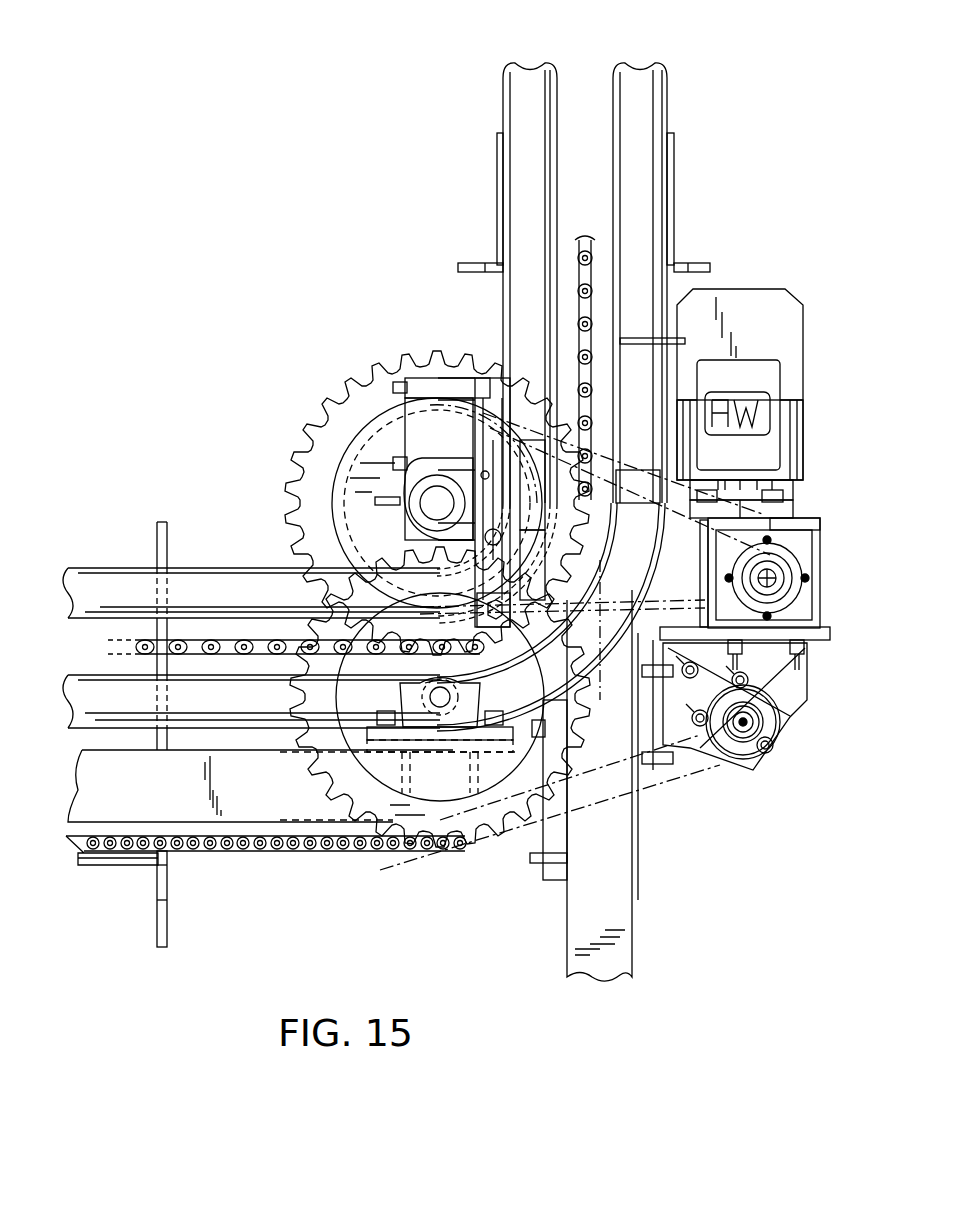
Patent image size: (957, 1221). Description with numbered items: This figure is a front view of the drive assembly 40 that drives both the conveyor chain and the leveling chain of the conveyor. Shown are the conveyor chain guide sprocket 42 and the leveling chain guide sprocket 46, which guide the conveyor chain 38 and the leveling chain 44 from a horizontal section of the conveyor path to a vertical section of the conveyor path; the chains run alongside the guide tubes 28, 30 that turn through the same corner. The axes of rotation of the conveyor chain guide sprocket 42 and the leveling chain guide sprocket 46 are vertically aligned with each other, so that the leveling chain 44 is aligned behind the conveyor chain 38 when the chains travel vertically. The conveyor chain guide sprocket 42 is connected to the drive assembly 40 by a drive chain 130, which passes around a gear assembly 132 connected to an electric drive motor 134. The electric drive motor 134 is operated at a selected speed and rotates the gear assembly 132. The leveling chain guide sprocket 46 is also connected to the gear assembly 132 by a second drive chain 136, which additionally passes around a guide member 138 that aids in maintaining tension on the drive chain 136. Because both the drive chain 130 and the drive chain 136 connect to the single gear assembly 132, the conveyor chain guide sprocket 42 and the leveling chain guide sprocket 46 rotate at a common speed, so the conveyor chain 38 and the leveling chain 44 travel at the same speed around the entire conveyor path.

The first guide tube 28 is at (525, 76).
The second guide tube 30 is at (640, 90).
The conveyor chain 38 is at (228, 647).
The drive assembly 40 is at (822, 386).
The conveyor chain guide sprocket 42 is at (345, 420).
The leveling chain 44 is at (333, 845).
The leveling chain guide sprocket 46 is at (478, 803).
The drive chain 130 is at (640, 485).
The gear assembly 132 is at (778, 572).
The electric drive motor 134 is at (787, 468).
The drive chain 136 is at (787, 690).
The guide member 138 is at (741, 745).